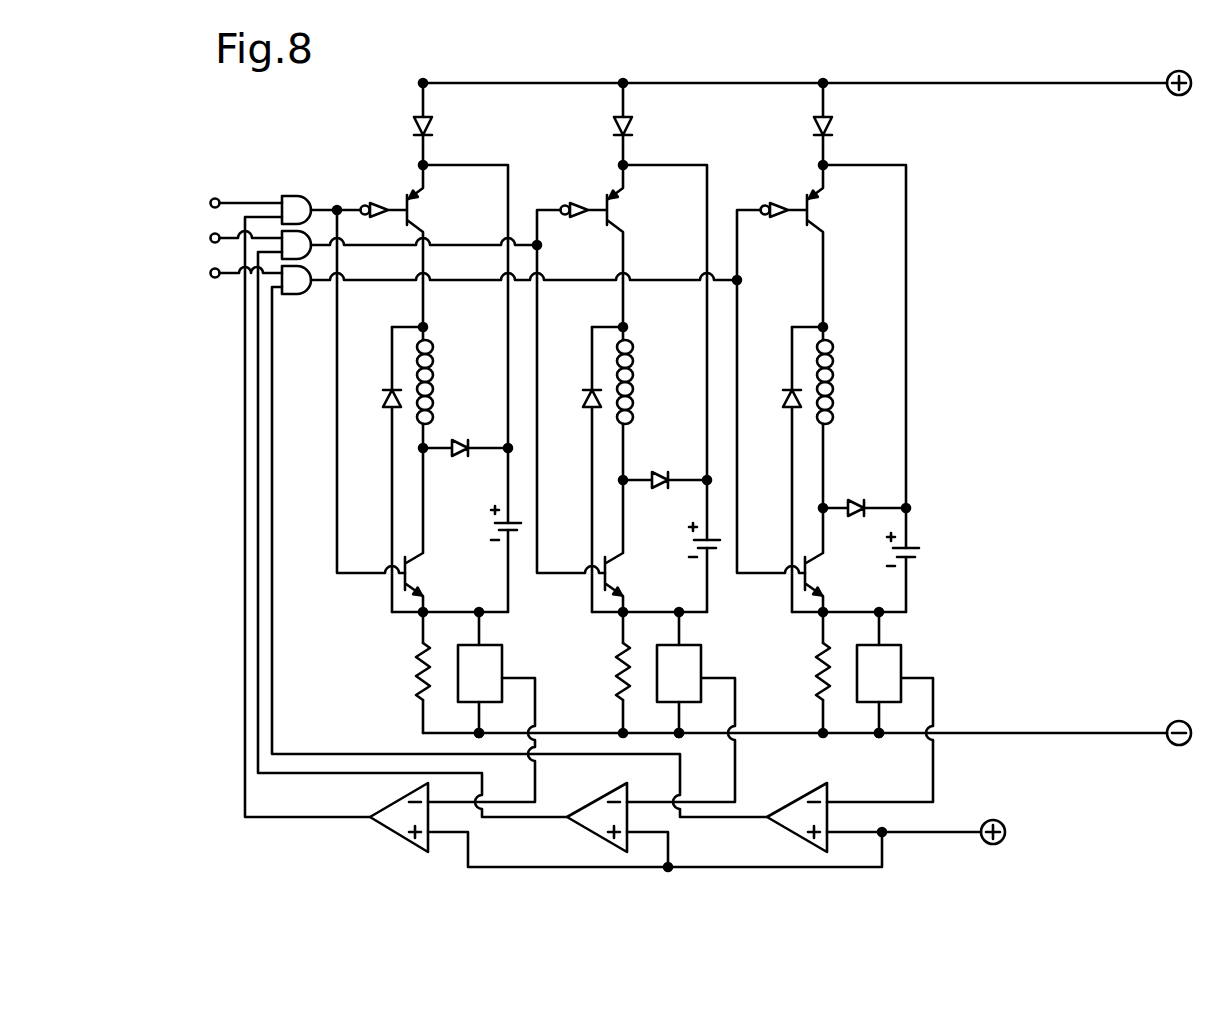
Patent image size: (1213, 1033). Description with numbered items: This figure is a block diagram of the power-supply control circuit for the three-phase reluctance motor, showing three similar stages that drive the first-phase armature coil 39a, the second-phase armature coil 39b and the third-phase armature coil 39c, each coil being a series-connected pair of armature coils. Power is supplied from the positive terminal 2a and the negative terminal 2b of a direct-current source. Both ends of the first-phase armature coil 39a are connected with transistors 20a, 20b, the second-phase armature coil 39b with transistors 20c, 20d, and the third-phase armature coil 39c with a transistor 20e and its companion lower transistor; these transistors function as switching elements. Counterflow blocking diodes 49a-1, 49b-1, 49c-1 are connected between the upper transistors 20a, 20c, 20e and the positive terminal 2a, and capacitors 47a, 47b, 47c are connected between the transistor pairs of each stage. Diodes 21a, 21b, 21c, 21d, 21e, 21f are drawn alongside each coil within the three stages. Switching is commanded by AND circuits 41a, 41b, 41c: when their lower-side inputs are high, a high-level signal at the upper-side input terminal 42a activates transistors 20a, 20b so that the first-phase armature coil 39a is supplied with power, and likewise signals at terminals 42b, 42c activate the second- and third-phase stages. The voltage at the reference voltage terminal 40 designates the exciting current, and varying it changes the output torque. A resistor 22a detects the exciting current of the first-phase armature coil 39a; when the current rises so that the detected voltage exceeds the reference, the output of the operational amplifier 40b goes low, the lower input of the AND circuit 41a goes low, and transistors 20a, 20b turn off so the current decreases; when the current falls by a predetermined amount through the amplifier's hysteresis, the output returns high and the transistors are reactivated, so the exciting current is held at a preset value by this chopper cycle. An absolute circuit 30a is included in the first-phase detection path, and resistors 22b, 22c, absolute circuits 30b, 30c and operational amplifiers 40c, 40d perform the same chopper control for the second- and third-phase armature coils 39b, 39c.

The positive terminal 2a is at (1180, 95).
The negative terminal 2b is at (1180, 745).
The reference voltage terminal 40 is at (1005, 836).
The operational amplifier 40b is at (392, 832).
The operational amplifier 40c is at (589, 832).
The operational amplifier 40d is at (784, 832).
The AND circuit 41a is at (293, 195).
The AND circuit 41b is at (313, 232).
The AND circuit 41c is at (298, 295).
The terminal 42a is at (210, 203).
The terminal 42b is at (210, 238).
The terminal 42c is at (210, 273).
The counterflow blocking diode 49a-1 is at (433, 129).
The counterflow blocking diode 49b-1 is at (633, 129).
The counterflow blocking diode 49c-1 is at (833, 129).
The transistor 20a is at (422, 214).
The transistor 20b is at (420, 578).
The transistor 20c is at (622, 214).
The transistor 20d is at (620, 578).
The transistor 20e is at (822, 214).
The diode 21a is at (384, 398).
The diode 21b is at (456, 442).
The diode 21c is at (584, 398).
The diode 21d is at (651, 476).
The diode 21e is at (785, 398).
The diode 21f is at (853, 500).
The first-phase armature coil 39a is at (434, 372).
The second-phase armature coil 39b is at (634, 372).
The third-phase armature coil 39c is at (834, 372).
The capacitor 47a is at (495, 527).
The capacitor 47b is at (693, 546).
The capacitor 47c is at (921, 553).
The absolute circuit 30a is at (503, 648).
The absolute circuit 30b is at (702, 648).
The absolute circuit 30c is at (902, 648).
The resistor 22a is at (415, 676).
The resistor 22b is at (635, 676).
The resistor 22c is at (830, 676).